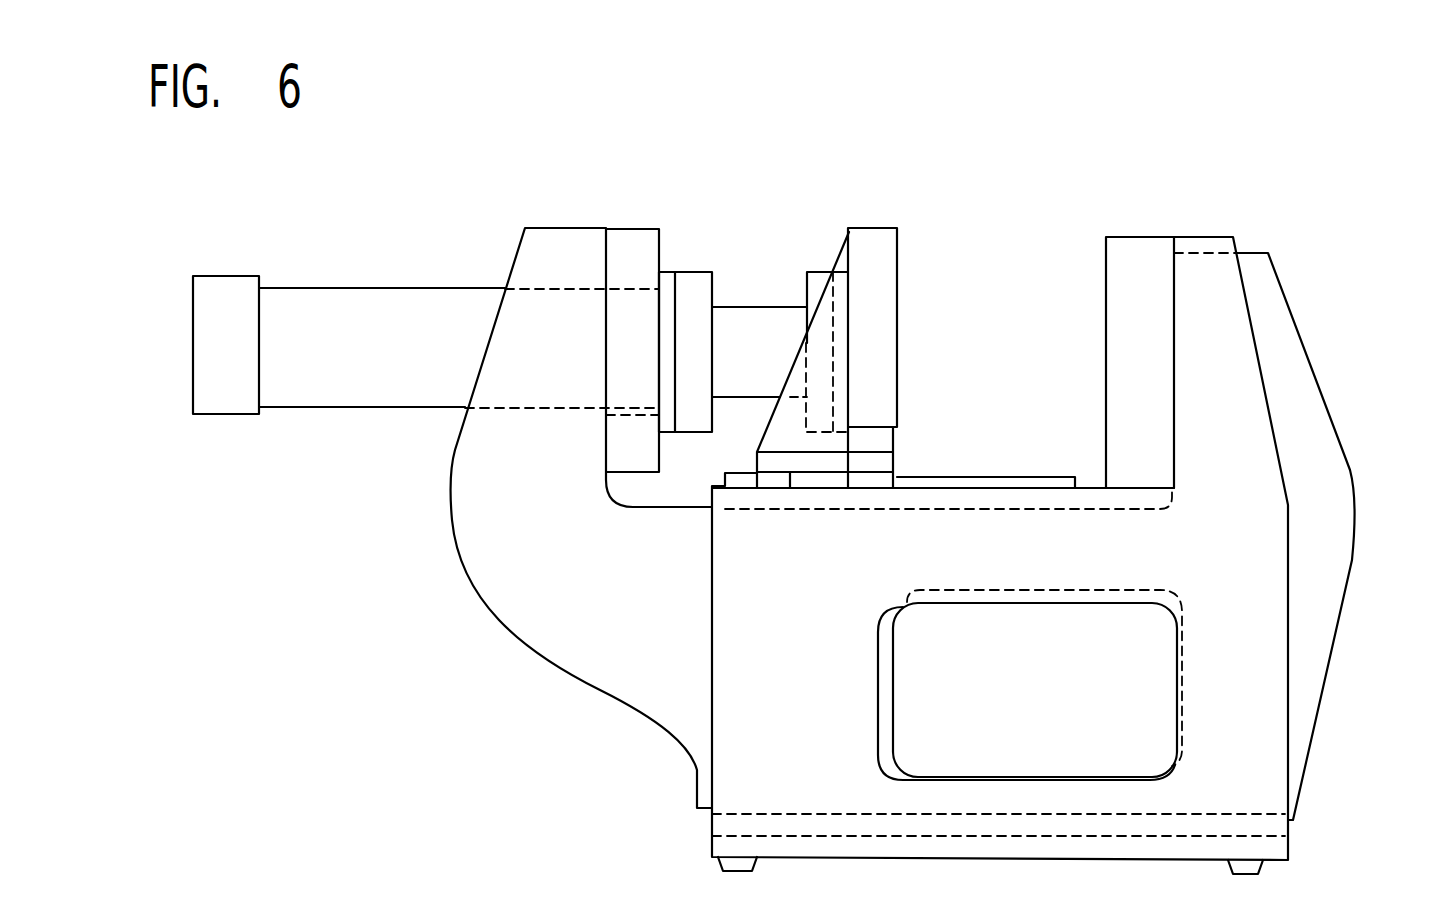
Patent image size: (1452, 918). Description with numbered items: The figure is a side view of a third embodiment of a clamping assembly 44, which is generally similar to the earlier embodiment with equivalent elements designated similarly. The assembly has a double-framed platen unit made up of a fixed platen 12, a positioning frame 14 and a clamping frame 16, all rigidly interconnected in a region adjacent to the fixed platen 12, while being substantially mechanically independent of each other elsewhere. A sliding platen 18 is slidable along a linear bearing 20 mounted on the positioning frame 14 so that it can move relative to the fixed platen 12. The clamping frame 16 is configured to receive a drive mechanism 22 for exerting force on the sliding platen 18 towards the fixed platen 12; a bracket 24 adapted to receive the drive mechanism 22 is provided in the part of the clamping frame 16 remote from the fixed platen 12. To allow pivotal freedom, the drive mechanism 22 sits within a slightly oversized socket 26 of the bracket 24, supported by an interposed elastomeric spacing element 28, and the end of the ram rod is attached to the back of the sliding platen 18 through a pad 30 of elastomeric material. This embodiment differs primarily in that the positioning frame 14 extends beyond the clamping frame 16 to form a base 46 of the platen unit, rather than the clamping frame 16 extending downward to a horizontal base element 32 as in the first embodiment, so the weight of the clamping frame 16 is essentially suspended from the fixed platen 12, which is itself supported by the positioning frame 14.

The fixed platen 12 is at (1143, 257).
The positioning frame 14 is at (1217, 313).
The clamping frame 16 is at (1318, 510).
The sliding platen 18 is at (873, 255).
The linear bearing 20 is at (995, 485).
The drive mechanism 22 is at (350, 313).
The bracket 24 is at (638, 242).
The socket 26 is at (643, 283).
The elastomeric spacing element 28 is at (667, 285).
The pad 30 is at (842, 282).
The horizontal base element 32 is at (697, 806).
The clamping assembly 44 is at (1349, 221).
The base 46 is at (713, 836).